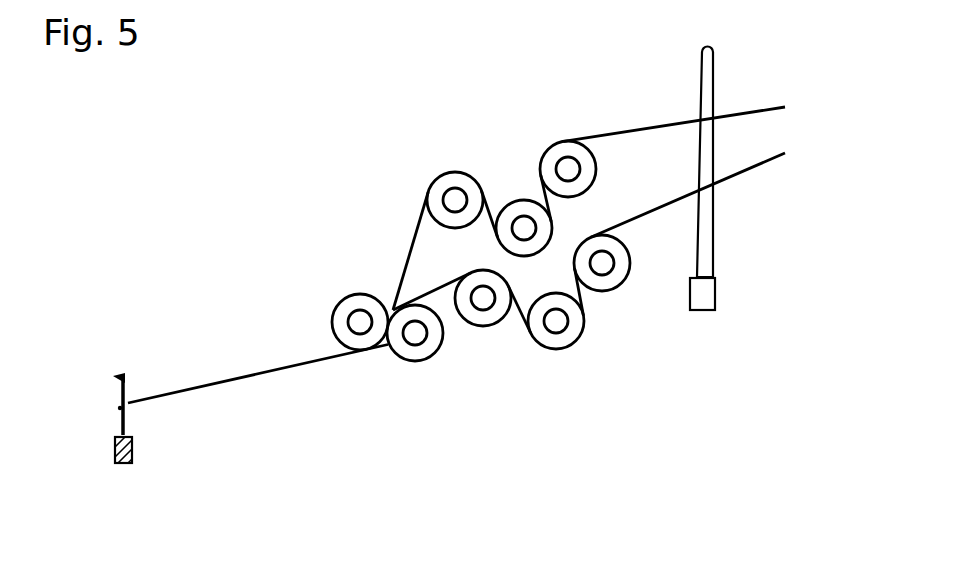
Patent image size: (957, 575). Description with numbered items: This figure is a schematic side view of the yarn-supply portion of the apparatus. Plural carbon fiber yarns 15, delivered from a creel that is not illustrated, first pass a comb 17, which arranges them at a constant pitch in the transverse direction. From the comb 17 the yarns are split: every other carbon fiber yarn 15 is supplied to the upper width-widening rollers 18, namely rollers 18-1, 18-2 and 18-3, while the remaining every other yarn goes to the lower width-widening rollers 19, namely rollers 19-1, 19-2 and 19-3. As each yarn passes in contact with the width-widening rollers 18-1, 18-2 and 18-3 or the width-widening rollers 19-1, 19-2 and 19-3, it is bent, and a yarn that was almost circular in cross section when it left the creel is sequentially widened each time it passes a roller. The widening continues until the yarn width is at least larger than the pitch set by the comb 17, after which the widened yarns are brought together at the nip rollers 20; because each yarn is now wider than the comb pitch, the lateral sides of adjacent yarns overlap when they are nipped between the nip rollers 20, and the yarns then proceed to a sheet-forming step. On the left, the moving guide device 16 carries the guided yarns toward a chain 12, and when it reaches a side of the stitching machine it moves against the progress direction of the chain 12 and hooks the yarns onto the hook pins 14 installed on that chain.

The chain 12 is at (132, 462).
The hook pins 14 is at (125, 373).
The carbon fiber yarns 15 is at (765, 158).
The moving guide device 16 is at (403, 218).
The comb 17 is at (713, 230).
The upper width-widening rollers 18 is at (464, 147).
The width-widening roller 18-1 is at (563, 155).
The width-widening roller 18-2 is at (513, 203).
The width-widening roller 18-3 is at (440, 192).
The lower width-widening rollers 19 is at (568, 384).
The width-widening roller 19-1 is at (618, 287).
The width-widening roller 19-2 is at (555, 342).
The width-widening roller 19-3 is at (478, 327).
The nip rollers 20 is at (400, 357).